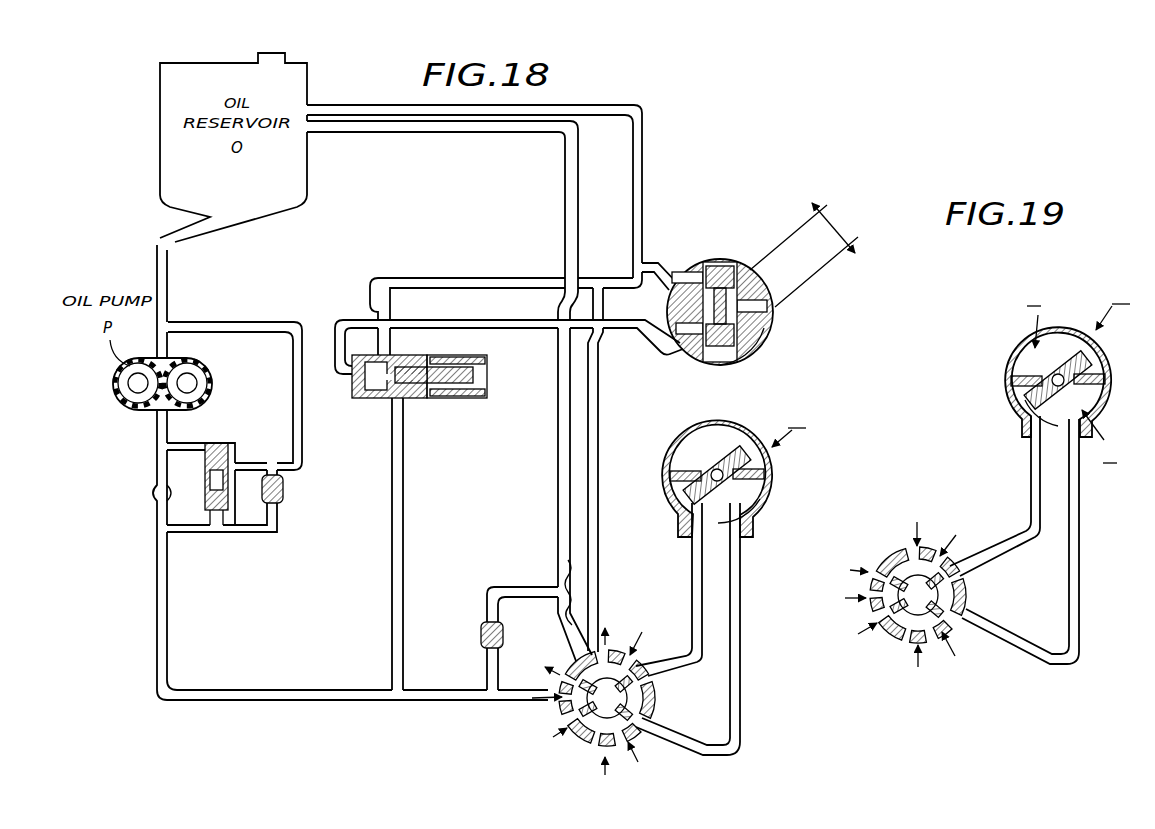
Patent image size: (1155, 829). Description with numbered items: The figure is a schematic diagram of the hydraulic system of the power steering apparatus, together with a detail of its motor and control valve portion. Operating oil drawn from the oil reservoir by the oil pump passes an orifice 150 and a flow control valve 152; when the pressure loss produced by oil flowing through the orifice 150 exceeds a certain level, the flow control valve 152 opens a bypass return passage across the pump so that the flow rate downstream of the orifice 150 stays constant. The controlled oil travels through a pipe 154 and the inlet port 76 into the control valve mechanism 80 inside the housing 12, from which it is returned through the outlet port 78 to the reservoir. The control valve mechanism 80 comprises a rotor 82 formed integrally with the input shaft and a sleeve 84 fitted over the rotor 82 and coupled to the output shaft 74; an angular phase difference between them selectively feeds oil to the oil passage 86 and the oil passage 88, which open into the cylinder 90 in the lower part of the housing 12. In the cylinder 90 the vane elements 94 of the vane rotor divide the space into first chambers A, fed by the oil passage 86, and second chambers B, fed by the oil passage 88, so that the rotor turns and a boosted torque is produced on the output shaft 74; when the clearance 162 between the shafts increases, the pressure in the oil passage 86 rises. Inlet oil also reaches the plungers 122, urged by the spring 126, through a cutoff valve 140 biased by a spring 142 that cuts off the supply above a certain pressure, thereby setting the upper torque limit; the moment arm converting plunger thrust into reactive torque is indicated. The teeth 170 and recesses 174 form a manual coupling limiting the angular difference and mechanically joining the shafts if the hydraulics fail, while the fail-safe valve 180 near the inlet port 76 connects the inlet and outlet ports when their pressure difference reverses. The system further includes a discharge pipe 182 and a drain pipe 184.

In FIG. 18, the housing 12 is at (728, 471).
In FIG. 19, the housing 12 is at (1054, 373).
In FIG. 18, the output shaft 74 is at (750, 272).
In FIG. 18, the inlet port 76 is at (532, 698).
In FIG. 18, the outlet port 78 is at (568, 562).
In FIG. 18, the control valve mechanism 80 is at (611, 712).
In FIG. 19, the control valve mechanism 80 is at (925, 611).
In FIG. 18, the rotor 82 is at (572, 668).
In FIG. 19, the rotor 82 is at (913, 577).
In FIG. 18, the sleeve 84 is at (656, 697).
In FIG. 19, the sleeve 84 is at (991, 597).
In FIG. 18, the oil passage 86 is at (692, 577).
In FIG. 19, the oil passage 86 is at (1030, 479).
In FIG. 18, the oil passage 88 is at (740, 636).
In FIG. 19, the oil passage 88 is at (1081, 590).
In FIG. 18, the cylinder 90 is at (766, 505).
In FIG. 19, the cylinder 90 is at (1008, 387).
In FIG. 18, the vane elements 94 is at (760, 480).
In FIG. 19, the vane elements 94 is at (1022, 357).
In FIG. 18, the plungers 122 is at (668, 272).
In FIG. 18, the spring 126 is at (698, 300).
In FIG. 18, the cutoff valve 140 is at (392, 397).
In FIG. 18, the spring 142 is at (487, 362).
In FIG. 18, the orifice 150 is at (153, 493).
In FIG. 18, the flow control valve 152 is at (215, 532).
In FIG. 18, the pipe 154 is at (240, 702).
In FIG. 18, the clearance 162 is at (656, 673).
In FIG. 18, the teeth 170 is at (770, 338).
In FIG. 18, the recesses 174 is at (743, 347).
In FIG. 18, the fail-safe valve 180 is at (486, 626).
In FIG. 18, the discharge pipe 182 is at (558, 445).
In FIG. 18, the drain pipe 184 is at (598, 518).